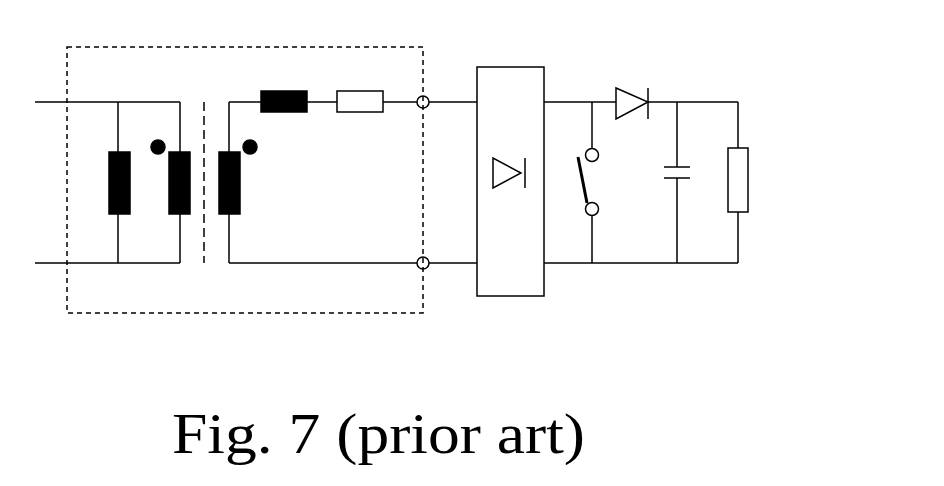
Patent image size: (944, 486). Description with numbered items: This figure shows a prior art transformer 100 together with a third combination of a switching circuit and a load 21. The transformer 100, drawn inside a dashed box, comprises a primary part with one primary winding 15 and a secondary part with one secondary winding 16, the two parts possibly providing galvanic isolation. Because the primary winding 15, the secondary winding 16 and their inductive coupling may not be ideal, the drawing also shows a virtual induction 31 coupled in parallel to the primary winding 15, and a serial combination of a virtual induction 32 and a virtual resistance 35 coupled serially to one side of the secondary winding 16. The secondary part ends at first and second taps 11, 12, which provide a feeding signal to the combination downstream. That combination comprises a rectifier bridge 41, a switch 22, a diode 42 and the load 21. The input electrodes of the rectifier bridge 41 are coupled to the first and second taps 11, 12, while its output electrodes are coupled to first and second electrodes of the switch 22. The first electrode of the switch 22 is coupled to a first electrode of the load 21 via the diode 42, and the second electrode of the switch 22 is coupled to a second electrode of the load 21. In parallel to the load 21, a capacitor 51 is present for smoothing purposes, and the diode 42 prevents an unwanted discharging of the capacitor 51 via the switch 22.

The transformer 100 is at (388, 313).
The virtual induction 31 is at (105, 182).
The primary winding 15 is at (170, 182).
The secondary winding 16 is at (243, 182).
The virtual induction 32 is at (284, 87).
The virtual resistance 35 is at (360, 87).
The second tap 12 is at (427, 97).
The first tap 11 is at (427, 268).
The rectifier bridge 41 is at (511, 296).
The switch 22 is at (587, 185).
The diode 42 is at (632, 87).
The capacitor 51 is at (677, 183).
The load 21 is at (748, 178).